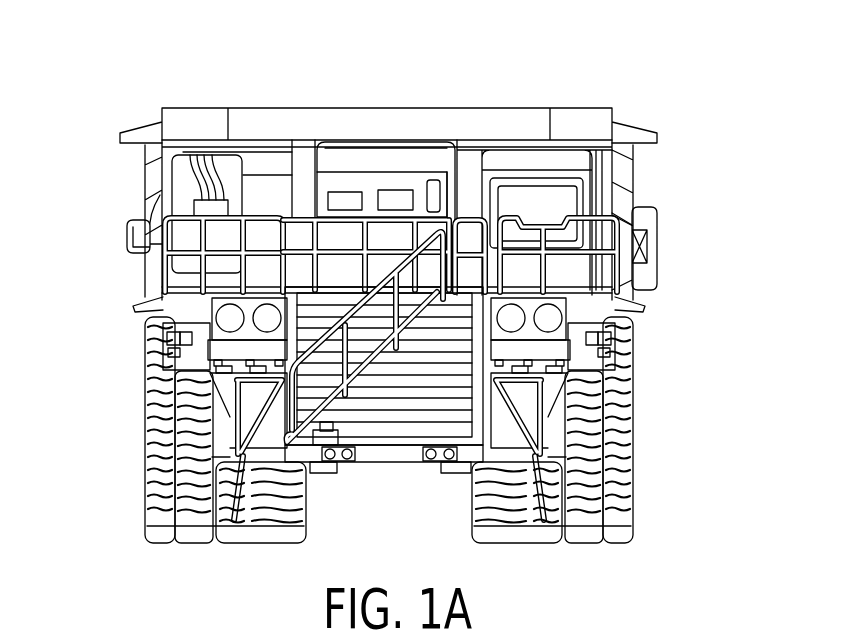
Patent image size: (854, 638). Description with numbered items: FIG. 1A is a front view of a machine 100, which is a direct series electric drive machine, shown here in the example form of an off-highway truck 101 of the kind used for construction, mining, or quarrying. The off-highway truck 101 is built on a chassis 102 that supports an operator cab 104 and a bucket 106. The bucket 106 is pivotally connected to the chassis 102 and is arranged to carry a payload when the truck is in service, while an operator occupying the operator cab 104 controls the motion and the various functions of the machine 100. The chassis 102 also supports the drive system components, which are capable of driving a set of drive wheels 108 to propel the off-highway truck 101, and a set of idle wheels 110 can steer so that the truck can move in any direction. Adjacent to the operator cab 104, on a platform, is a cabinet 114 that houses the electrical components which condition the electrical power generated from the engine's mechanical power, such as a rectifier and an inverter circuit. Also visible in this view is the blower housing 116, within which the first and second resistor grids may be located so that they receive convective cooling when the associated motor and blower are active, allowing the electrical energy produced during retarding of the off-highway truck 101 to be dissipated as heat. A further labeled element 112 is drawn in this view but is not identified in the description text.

The machine 100 is at (604, 70).
The machine frame / body 101 is at (96, 287).
The bumper 102 is at (357, 465).
The cab window 104 is at (547, 208).
The roof 106 is at (260, 123).
The left track 108 is at (160, 437).
The right track 110 is at (573, 450).
The radiator grille 112 is at (388, 410).
The operator cab 114 is at (393, 183).
The hydraulic hoses 116 is at (184, 207).